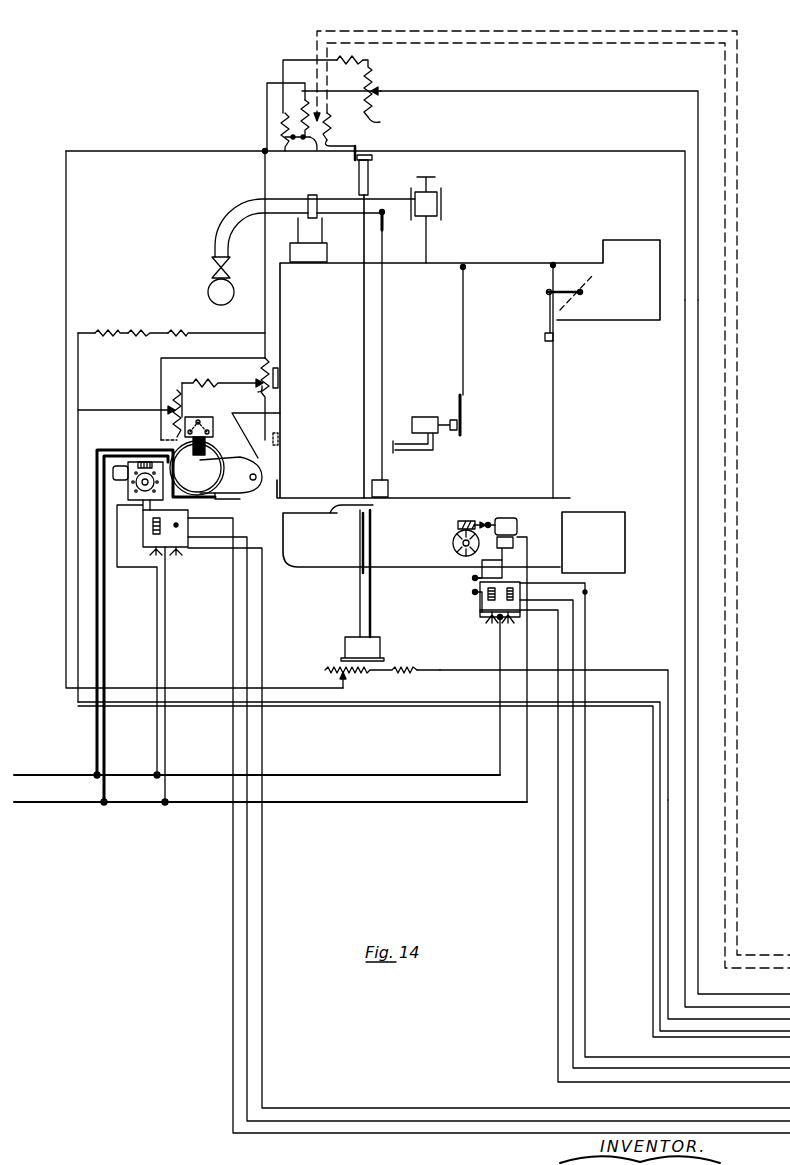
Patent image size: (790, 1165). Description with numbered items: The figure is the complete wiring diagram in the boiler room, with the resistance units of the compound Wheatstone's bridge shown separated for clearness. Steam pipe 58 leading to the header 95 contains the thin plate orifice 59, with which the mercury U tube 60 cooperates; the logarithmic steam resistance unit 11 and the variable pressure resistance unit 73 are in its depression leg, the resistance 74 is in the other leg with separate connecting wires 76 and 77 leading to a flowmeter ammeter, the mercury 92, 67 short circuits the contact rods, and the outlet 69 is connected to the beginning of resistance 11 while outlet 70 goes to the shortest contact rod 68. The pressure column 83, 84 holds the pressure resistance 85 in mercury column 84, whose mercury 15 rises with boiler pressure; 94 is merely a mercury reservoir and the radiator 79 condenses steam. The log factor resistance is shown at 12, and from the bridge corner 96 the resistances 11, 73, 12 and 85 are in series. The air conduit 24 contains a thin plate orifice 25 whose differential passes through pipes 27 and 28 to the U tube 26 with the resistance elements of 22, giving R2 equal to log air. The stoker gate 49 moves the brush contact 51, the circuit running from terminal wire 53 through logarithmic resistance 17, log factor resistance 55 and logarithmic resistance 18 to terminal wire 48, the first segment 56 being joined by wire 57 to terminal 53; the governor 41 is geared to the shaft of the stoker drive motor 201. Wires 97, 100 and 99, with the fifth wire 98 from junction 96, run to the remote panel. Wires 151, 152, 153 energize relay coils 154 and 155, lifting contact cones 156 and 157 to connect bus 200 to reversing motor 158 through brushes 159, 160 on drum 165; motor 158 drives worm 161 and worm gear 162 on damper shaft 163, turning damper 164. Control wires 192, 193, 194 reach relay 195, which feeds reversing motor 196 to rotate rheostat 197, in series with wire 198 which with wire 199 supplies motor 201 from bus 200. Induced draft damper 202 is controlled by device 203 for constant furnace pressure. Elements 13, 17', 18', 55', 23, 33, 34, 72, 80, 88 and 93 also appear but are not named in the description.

The logarithmic steam resistance unit 11 is at (310, 141).
The log factor resistance 12 is at (364, 59).
The resistor 13 is at (366, 100).
The mercury 15 is at (382, 88).
The logarithmic resistance 17 is at (255, 390).
The resistor 17' is at (216, 325).
The logarithmic resistance 18 is at (181, 400).
The resistor 18' is at (103, 325).
The resistance elements 22 is at (331, 667).
The resistor end 23 is at (406, 668).
The conduit 24 is at (317, 553).
The thin plate orifice 25 is at (366, 505).
The U tube 26 is at (381, 647).
The pipe 27 is at (371, 604).
The pipe 28 is at (360, 604).
The conductor 33 is at (454, 668).
The motor 34 is at (262, 477).
The governor 41 is at (206, 408).
The terminal wire 48 is at (110, 400).
The gate 49 is at (279, 440).
The brush contact 51 is at (250, 394).
The terminal wire 53 is at (265, 314).
The log factor resistance 55 is at (222, 390).
The resistor 55' is at (148, 325).
The first segment 56 is at (173, 437).
The wire 57 is at (222, 357).
The steam pipe 58 is at (247, 204).
The thin plate orifice 59 is at (319, 193).
The U tube 60 is at (290, 253).
The mercury 67 is at (367, 147).
The shortest contact rod 68 is at (303, 100).
The outlet 69 is at (267, 91).
The outlet 70 is at (334, 84).
The conductor 72 is at (283, 62).
The variable pressure resistance unit 73 is at (283, 120).
The resistance 74 is at (331, 128).
The connecting wire 76 is at (466, 47).
The connecting wire 77 is at (496, 31).
The radiator 79 is at (386, 222).
The rod 80 is at (385, 236).
The pressure column 83 is at (352, 346).
The mercury column 84 is at (353, 177).
The pressure resistance 85 is at (385, 115).
The bracket 88 is at (373, 160).
The mercury 92 is at (296, 140).
The conductor 93 is at (428, 84).
The mercury reservoir 94 is at (390, 489).
The header 95 is at (208, 292).
The corner of compound Wheatstone's bridge 96 is at (264, 150).
The wire 97 is at (744, 648).
The wire 98 is at (737, 656).
The wire 99 is at (729, 912).
The wire 100 is at (721, 1042).
The wire 151 is at (655, 822).
The wire 152 is at (655, 837).
The wire 153 is at (635, 848).
The relay coil 154 is at (485, 596).
The relay coil 155 is at (480, 612).
The contact cone 156 is at (491, 626).
The contact cone 157 is at (500, 623).
The reversing motor 158 is at (503, 517).
The brush 159 is at (470, 579).
The brush 160 is at (470, 594).
The worm 161 is at (473, 508).
The worm gear 162 is at (460, 521).
The damper shaft 163 is at (455, 541).
The damper 164 is at (460, 557).
The drum 165 is at (453, 551).
The control wire 192 is at (489, 831).
The control wire 193 is at (489, 831).
The control wire 194 is at (489, 827).
The relay 195 is at (188, 528).
The reversing motor 196 is at (113, 470).
The rheostat 197 is at (145, 460).
The wire 198 is at (106, 617).
The wire 199 is at (98, 640).
The bus 200 is at (235, 788).
The stoker drive motor 201 is at (218, 492).
The damper 202 is at (591, 285).
The furnace pressure control device 203 is at (438, 440).
The log air resistance R2 is at (371, 684).